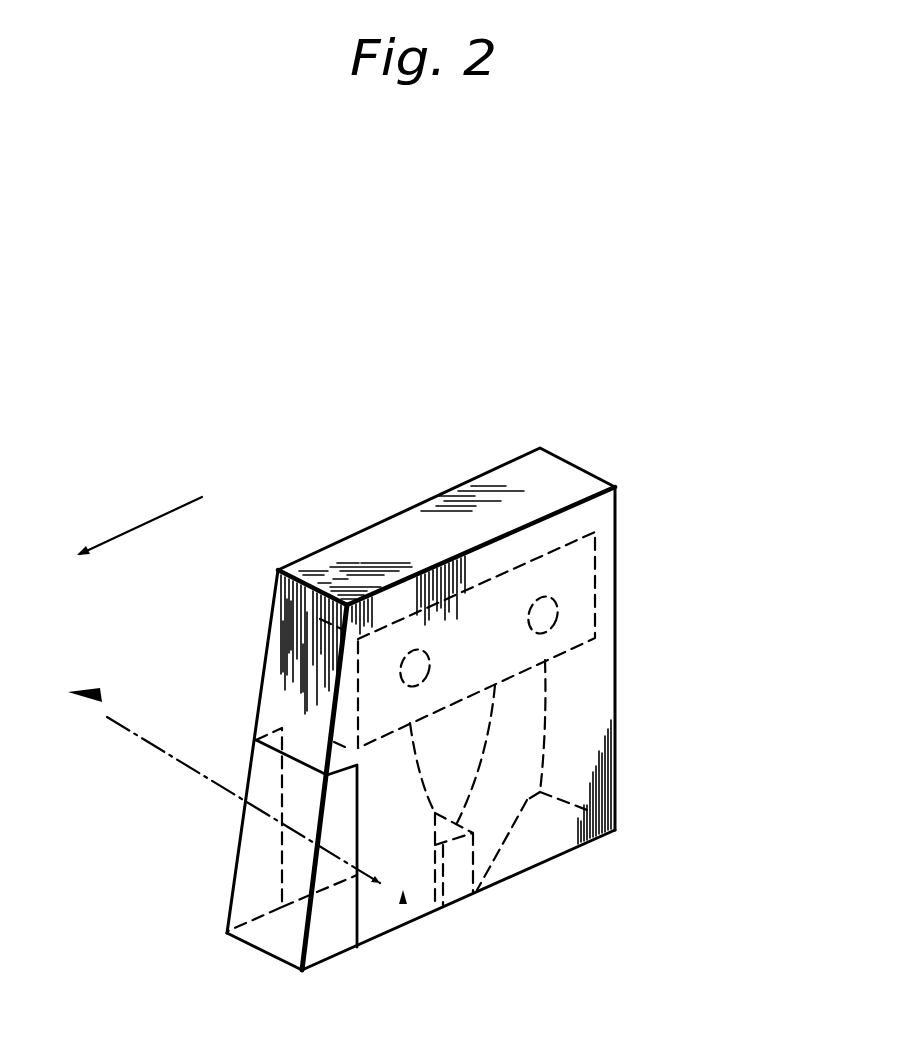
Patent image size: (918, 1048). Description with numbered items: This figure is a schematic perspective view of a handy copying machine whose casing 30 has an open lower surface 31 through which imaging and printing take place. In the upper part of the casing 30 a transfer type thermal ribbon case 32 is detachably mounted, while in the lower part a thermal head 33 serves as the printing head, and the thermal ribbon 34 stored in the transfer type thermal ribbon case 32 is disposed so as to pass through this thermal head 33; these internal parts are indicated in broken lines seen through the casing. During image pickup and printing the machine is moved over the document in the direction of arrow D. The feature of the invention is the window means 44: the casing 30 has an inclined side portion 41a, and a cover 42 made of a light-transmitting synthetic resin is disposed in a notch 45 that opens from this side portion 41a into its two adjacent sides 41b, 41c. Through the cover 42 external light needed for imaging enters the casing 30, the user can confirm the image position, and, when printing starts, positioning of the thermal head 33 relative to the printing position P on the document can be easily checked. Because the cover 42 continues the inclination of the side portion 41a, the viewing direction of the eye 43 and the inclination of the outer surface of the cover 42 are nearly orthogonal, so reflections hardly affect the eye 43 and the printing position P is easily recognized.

The casing 30 is at (558, 480).
The lower surface 31 is at (263, 955).
The transfer type thermal ribbon case 32 is at (583, 597).
The thermal head 33 is at (477, 893).
The thermal ribbon 34 is at (520, 822).
The side portion 41a is at (288, 653).
The adjacent side 41b is at (308, 549).
The adjacent side 41c is at (412, 593).
The cover 42 is at (268, 882).
The eye 43 is at (84, 705).
The window means 44 is at (230, 762).
The notch 45 is at (298, 758).
The printing position P is at (404, 905).
The direction of movement D is at (143, 522).